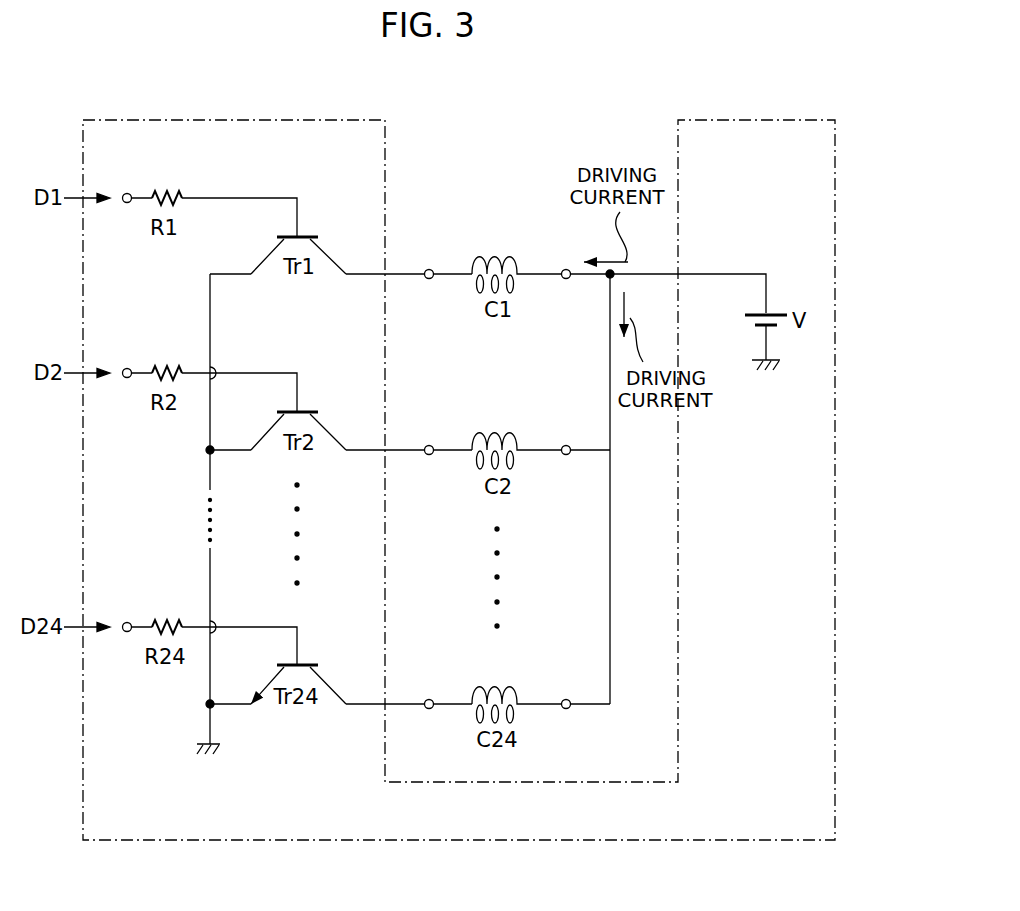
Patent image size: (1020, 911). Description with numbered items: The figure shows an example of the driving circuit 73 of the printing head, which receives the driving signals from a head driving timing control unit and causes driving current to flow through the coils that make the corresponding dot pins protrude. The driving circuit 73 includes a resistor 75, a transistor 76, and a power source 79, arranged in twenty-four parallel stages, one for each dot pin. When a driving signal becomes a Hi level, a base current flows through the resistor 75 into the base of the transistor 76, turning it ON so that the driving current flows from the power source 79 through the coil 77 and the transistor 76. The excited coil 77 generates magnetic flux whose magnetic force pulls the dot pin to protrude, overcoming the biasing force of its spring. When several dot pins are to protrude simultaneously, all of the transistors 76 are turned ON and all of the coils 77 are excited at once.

The driving circuit 73 is at (790, 118).
The resistor 75 is at (156, 184).
The transistor 76 is at (314, 220).
The coil 77 is at (480, 254).
The power source 79 is at (780, 300).